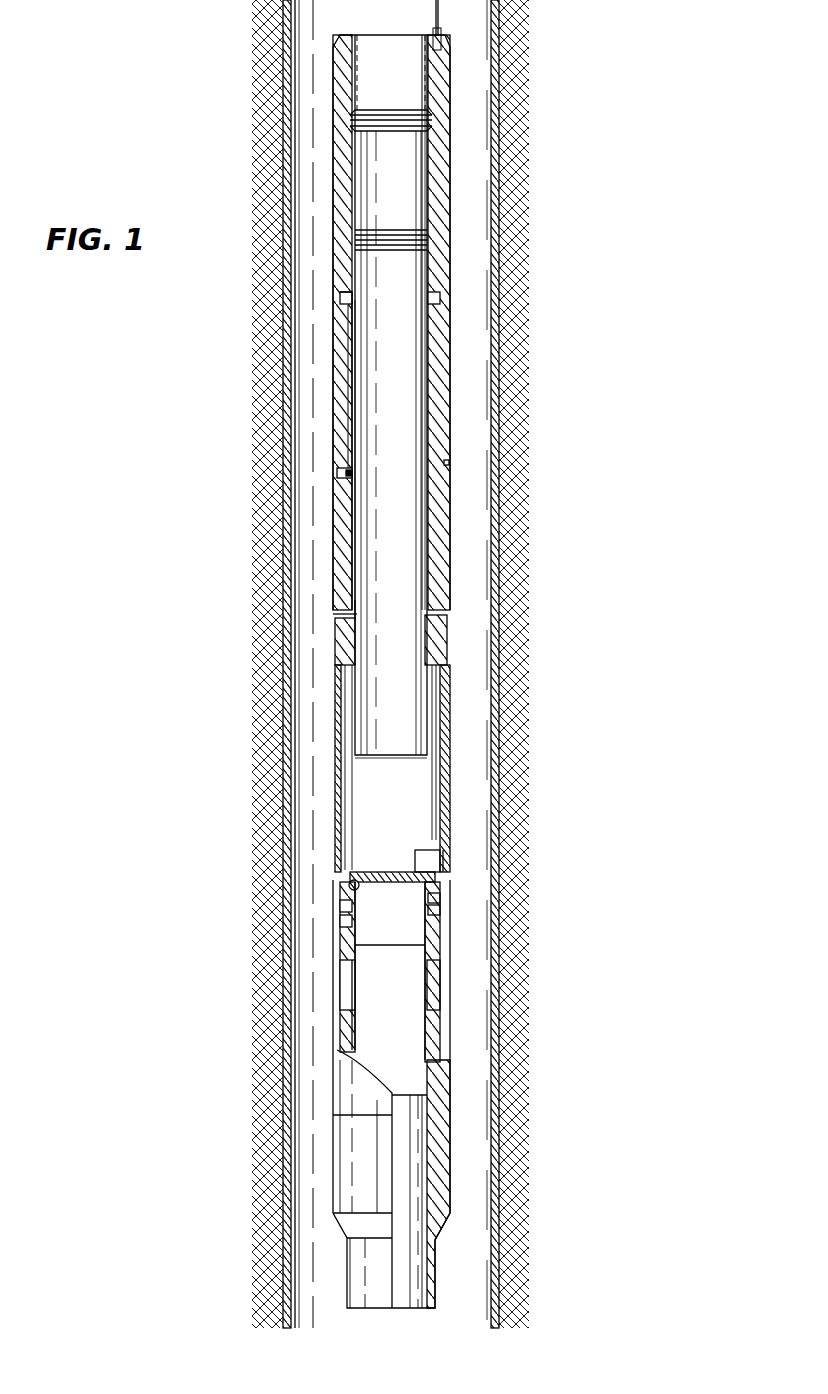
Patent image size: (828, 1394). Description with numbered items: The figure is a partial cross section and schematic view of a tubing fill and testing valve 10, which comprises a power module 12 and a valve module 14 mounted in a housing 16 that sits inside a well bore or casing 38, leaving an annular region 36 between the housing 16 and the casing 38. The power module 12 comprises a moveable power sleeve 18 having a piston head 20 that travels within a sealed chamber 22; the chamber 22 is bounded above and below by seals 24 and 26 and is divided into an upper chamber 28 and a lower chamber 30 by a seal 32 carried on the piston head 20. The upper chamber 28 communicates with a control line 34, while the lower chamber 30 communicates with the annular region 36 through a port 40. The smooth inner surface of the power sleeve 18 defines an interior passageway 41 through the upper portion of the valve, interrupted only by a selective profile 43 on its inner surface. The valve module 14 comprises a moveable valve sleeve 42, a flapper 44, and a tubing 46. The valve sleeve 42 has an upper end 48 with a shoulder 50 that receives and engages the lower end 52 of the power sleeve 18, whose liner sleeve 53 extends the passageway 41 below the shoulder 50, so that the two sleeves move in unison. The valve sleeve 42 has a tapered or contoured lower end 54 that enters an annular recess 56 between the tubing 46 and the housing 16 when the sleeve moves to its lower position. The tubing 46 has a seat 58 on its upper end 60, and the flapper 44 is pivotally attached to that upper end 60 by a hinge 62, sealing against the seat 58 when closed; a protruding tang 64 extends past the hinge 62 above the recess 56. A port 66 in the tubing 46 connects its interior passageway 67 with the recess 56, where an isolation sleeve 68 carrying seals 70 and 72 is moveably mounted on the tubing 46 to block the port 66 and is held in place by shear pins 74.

The tubing fill and testing valve 10 is at (612, 275).
The power module 12 is at (552, 368).
The valve module 14 is at (555, 872).
The housing 16 is at (291, 540).
The power sleeve 18 is at (445, 415).
The piston head 20 is at (345, 318).
The sealed chamber 22 is at (348, 408).
The seal 24 is at (355, 160).
The seal 26 is at (347, 486).
The upper chamber 28 is at (352, 298).
The lower chamber 30 is at (350, 383).
The seal 32 is at (440, 300).
The control line 34 is at (446, 103).
The annular region 36 is at (470, 70).
The well bore or casing 38 is at (283, 68).
The port 40 is at (448, 464).
The interior passageway 41 is at (391, 396).
The valve sleeve 42 is at (340, 742).
The selective profile 43 is at (378, 230).
The flapper 44 is at (365, 875).
The tubing 46 is at (345, 1025).
The upper end 48 is at (447, 633).
The shoulder 50 is at (358, 650).
The lower end 52 is at (358, 605).
The liner sleeve 53 is at (430, 740).
The lower end 54 is at (440, 822).
The annular recess 56 is at (345, 985).
The seat 58 is at (349, 884).
The upper end 60 is at (352, 1010).
The hinge 62 is at (437, 875).
The tang 64 is at (440, 857).
The port 66 is at (440, 922).
The interior passageway 67 is at (391, 1095).
The isolation sleeve 68 is at (440, 907).
The seal 70 is at (340, 905).
The seal 72 is at (340, 922).
The shear pins 74 is at (440, 896).